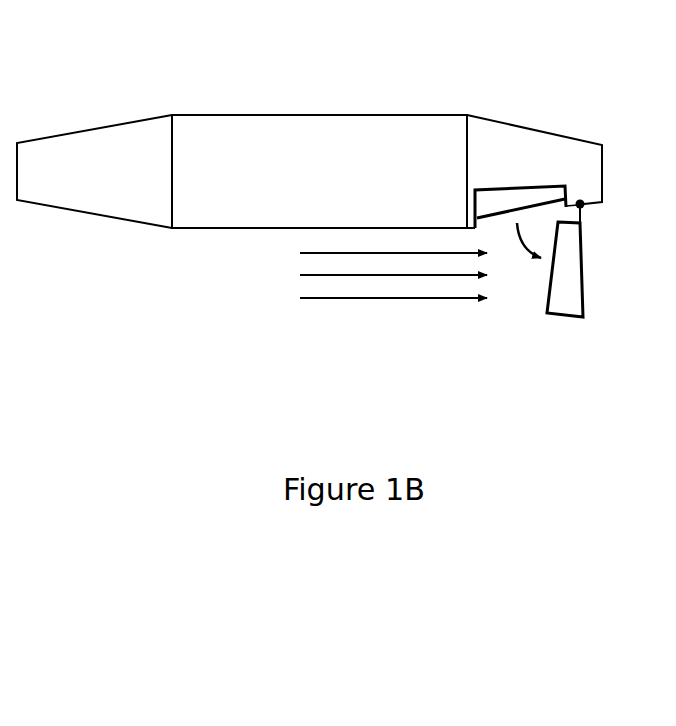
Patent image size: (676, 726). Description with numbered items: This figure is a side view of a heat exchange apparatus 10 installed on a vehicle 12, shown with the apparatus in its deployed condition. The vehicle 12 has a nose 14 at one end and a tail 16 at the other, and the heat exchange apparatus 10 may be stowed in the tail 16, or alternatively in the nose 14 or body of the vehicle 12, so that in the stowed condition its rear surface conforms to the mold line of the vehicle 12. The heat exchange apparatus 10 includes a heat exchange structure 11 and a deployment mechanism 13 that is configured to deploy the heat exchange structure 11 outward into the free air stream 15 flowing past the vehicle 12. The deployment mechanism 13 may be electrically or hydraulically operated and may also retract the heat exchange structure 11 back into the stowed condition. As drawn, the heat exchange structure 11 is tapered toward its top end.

The vehicle 12 is at (342, 53).
The nose 14 is at (115, 125).
The tail 16 is at (528, 128).
The deployment mechanism 13 is at (584, 221).
The heat exchange structure 11 is at (558, 315).
The heat exchange apparatus 10 is at (597, 294).
The free air stream 15 is at (390, 298).